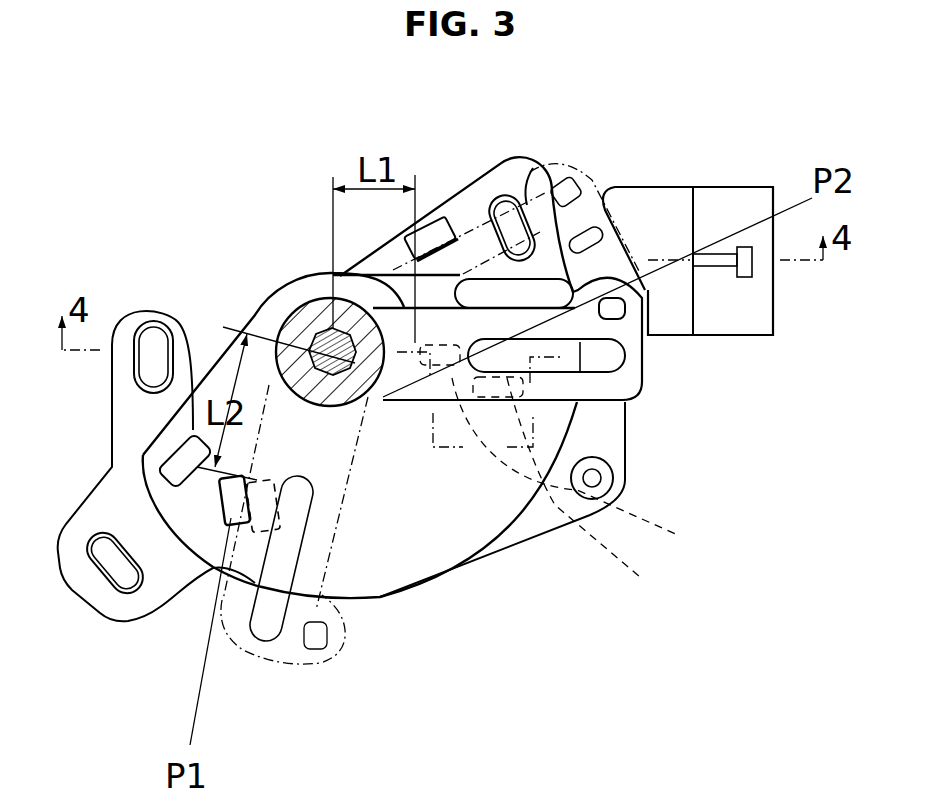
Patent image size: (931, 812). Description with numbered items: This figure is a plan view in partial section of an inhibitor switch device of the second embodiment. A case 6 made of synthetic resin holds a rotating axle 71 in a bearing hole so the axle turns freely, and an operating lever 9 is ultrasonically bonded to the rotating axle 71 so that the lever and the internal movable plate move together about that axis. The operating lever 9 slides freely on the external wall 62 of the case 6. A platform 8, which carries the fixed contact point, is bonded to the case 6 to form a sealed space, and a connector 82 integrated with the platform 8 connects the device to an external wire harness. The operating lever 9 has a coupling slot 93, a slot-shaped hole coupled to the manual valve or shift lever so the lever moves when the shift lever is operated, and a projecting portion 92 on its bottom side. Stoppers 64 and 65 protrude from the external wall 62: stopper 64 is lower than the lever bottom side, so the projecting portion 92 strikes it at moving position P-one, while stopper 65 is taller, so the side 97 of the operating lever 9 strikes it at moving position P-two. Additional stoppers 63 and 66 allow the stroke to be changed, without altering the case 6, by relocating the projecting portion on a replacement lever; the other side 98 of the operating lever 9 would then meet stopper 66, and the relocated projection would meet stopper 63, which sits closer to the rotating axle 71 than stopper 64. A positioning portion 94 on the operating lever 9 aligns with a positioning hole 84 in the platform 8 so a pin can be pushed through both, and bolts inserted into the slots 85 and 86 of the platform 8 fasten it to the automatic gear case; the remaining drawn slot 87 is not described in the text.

The case 6 is at (387, 603).
The platform 8 is at (550, 544).
The operating lever 9 is at (642, 400).
The external wall 62 is at (427, 550).
The stopper 63 is at (599, 490).
The stopper 64 is at (224, 528).
The stopper 65 is at (433, 232).
The stopper 66 is at (247, 330).
The rotating axle 71 is at (330, 350).
The connector 82 is at (717, 212).
The positioning hole 84 is at (601, 478).
The slot 85 is at (508, 212).
The slot 86 is at (120, 580).
The mounting slot 87 is at (152, 370).
The projecting portion 92 is at (590, 469).
The coupling slot 93 is at (643, 342).
The positioning portion 94 is at (614, 312).
The side 97 is at (366, 270).
The other side 98 is at (480, 532).